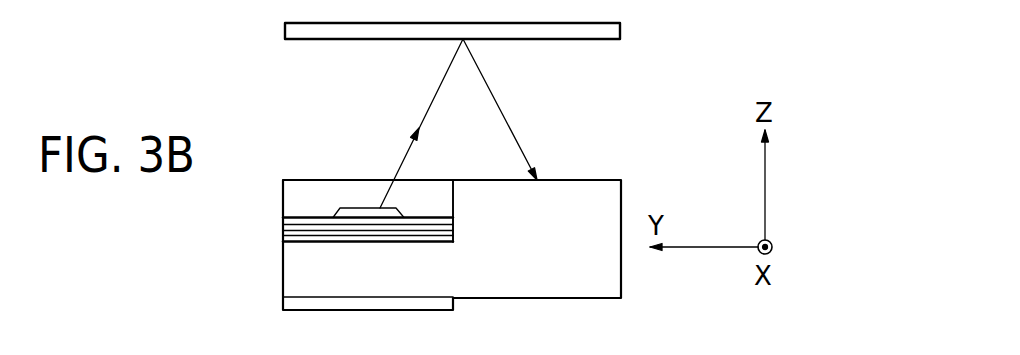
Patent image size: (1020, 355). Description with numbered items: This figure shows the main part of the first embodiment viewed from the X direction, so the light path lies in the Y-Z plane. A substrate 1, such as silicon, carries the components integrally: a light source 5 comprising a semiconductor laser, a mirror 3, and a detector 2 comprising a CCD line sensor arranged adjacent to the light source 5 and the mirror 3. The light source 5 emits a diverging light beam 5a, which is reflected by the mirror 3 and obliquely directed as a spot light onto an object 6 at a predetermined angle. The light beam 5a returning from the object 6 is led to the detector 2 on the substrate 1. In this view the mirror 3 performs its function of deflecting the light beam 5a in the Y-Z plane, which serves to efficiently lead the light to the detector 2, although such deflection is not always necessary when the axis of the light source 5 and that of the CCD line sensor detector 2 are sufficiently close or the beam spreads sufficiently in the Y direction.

The substrate 1 is at (600, 180).
The detector 2 is at (539, 178).
The mirror 3 is at (317, 195).
The light source 5 is at (268, 220).
The light beam 5a is at (428, 110).
The object 6 is at (560, 31).